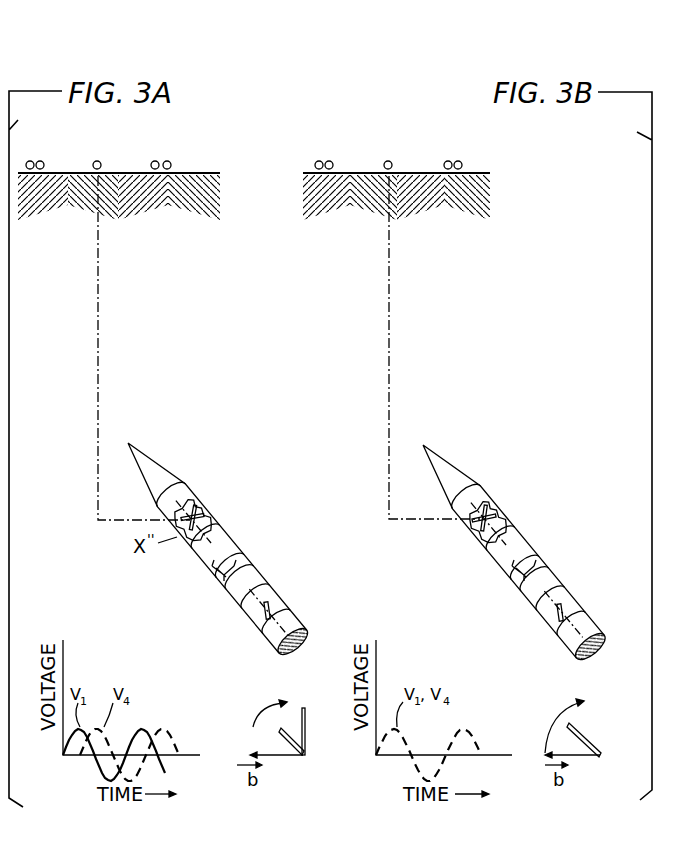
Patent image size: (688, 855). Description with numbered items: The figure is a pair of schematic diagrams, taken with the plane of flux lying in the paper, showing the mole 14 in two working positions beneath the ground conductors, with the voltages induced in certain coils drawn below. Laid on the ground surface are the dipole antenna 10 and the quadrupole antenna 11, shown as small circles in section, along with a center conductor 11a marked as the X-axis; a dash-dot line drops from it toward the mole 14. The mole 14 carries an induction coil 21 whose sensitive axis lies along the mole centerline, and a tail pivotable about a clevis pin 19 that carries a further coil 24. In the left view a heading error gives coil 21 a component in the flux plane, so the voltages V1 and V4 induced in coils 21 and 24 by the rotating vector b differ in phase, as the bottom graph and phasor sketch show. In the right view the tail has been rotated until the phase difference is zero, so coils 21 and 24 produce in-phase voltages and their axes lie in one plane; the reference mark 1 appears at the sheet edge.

In FIG. 3B, the sheet 1 is at (684, 158).
In FIG. 3A, the dipole antenna 10 is at (27, 161).
In FIG. 3B, the dipole antenna 10 is at (315, 163).
In FIG. 3A, the quadrupole antenna 11 is at (41, 161).
In FIG. 3B, the quadrupole antenna 11 is at (326, 160).
In FIG. 3A, the center coil (X-axis) 11a is at (97, 160).
In FIG. 3B, the center coil (X-axis) 11a is at (388, 160).
In FIG. 3A, the mole 14 is at (218, 525).
In FIG. 3B, the mole 14 is at (546, 519).
In FIG. 3A, the clevis pin 19 is at (208, 563).
In FIG. 3B, the clevis pin 19 is at (507, 563).
In FIG. 3A, the induction coil 21 is at (175, 512).
In FIG. 3B, the induction coil 21 is at (472, 513).
In FIG. 3A, the coil 24 is at (283, 605).
In FIG. 3B, the coil 24 is at (577, 605).